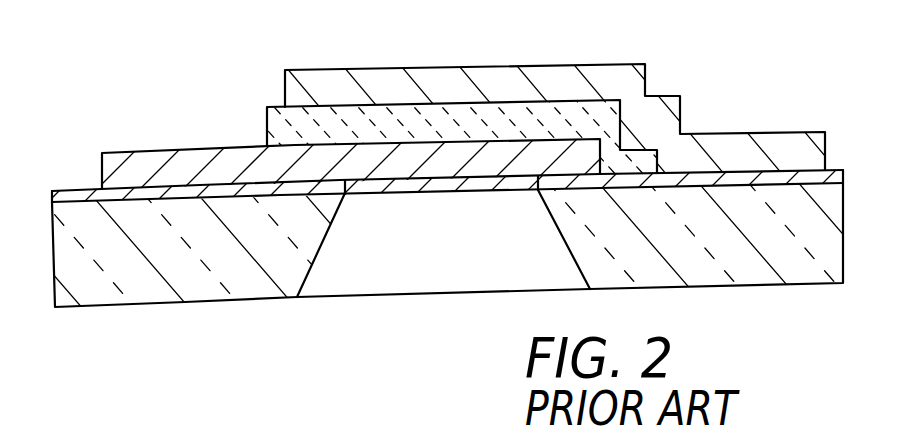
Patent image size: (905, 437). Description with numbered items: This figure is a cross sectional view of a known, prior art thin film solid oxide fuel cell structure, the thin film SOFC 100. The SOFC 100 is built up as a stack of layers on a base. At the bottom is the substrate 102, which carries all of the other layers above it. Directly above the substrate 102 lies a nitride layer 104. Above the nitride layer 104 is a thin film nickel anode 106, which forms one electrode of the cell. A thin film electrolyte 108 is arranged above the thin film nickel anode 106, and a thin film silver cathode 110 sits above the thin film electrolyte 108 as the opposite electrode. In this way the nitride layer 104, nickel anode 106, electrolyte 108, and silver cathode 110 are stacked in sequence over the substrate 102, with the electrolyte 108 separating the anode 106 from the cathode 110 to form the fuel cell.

The thin film SOFC 100 is at (88, 70).
The substrate 102 is at (182, 285).
The nitride layer 104 is at (67, 188).
The thin film nickel anode 106 is at (158, 148).
The thin film electrolyte 108 is at (610, 120).
The thin film silver cathode 110 is at (623, 78).